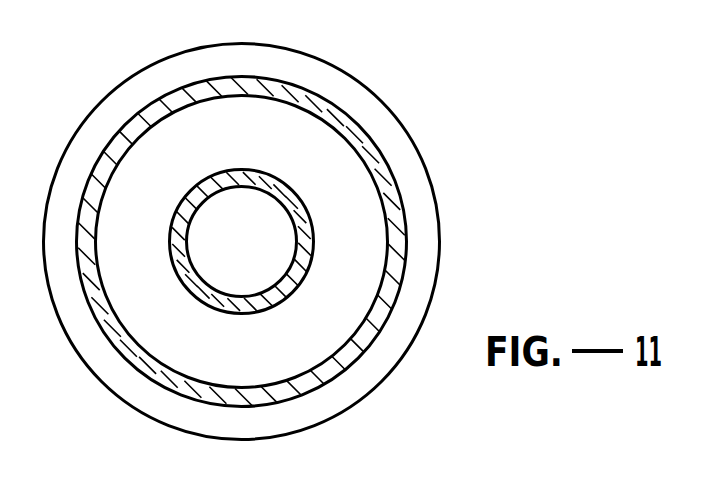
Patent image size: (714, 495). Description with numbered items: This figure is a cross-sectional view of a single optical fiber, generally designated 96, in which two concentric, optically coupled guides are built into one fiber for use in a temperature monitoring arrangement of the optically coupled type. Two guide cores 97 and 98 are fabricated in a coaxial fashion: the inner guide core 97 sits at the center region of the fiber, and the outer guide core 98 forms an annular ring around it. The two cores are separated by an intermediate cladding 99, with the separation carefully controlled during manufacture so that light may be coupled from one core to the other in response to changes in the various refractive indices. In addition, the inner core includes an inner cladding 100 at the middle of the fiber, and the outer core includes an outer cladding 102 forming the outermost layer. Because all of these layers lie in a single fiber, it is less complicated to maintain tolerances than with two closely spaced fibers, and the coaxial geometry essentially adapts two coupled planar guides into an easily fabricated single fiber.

The single fiber configuration 96 is at (277, 242).
The inner guide core 97 is at (293, 213).
The outer guide core 98 is at (347, 125).
The intermediate cladding 99 is at (137, 307).
The inner cladding 100 is at (245, 268).
The outer cladding 102 is at (430, 260).